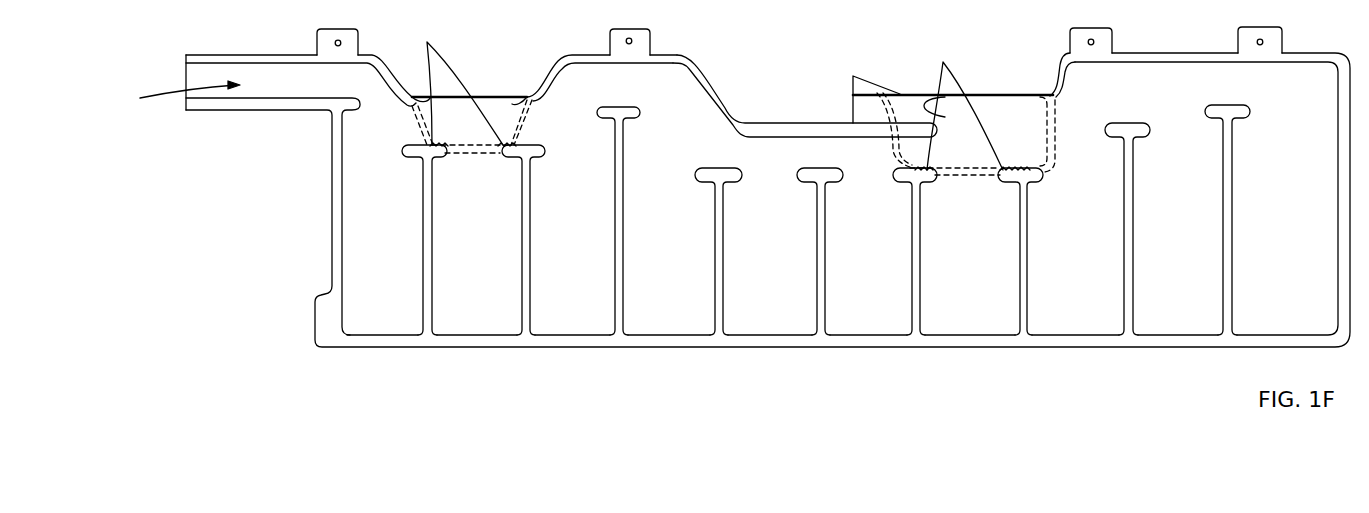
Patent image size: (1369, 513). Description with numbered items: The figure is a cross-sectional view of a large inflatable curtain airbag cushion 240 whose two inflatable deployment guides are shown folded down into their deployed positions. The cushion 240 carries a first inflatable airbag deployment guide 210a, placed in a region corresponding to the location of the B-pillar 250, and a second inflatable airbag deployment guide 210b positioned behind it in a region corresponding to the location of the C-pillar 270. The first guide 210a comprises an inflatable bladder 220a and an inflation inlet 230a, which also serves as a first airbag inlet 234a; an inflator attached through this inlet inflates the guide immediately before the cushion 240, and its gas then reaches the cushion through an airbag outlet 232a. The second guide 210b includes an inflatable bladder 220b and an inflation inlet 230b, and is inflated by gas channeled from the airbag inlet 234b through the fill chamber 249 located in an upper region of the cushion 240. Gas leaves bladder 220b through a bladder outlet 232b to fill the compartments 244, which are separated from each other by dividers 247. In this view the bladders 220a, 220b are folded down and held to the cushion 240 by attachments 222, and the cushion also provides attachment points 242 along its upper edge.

The first inflatable airbag deployment guide 210a is at (1058, 29).
The second inflatable airbag deployment guide 210b is at (492, 23).
The inflatable bladder 220a is at (1015, 117).
The inflatable bladder 220b is at (505, 115).
The attachments 222 is at (720, 97).
The inflation inlet 230a is at (895, 93).
The inflation inlet 230b is at (381, 92).
The airbag outlet 232a is at (900, 105).
The bladder outlet 232b is at (517, 98).
The first airbag inlet 234a is at (858, 113).
The airbag inlet 234b is at (287, 83).
The airbag cushion 240 is at (1186, 44).
The attachment points 242 is at (627, 39).
The compartments 244 is at (1302, 246).
The dividers 247 is at (715, 252).
The fill chamber 249 is at (667, 96).
The B-pillar 250 is at (1037, 359).
The C-pillar 270 is at (517, 359).